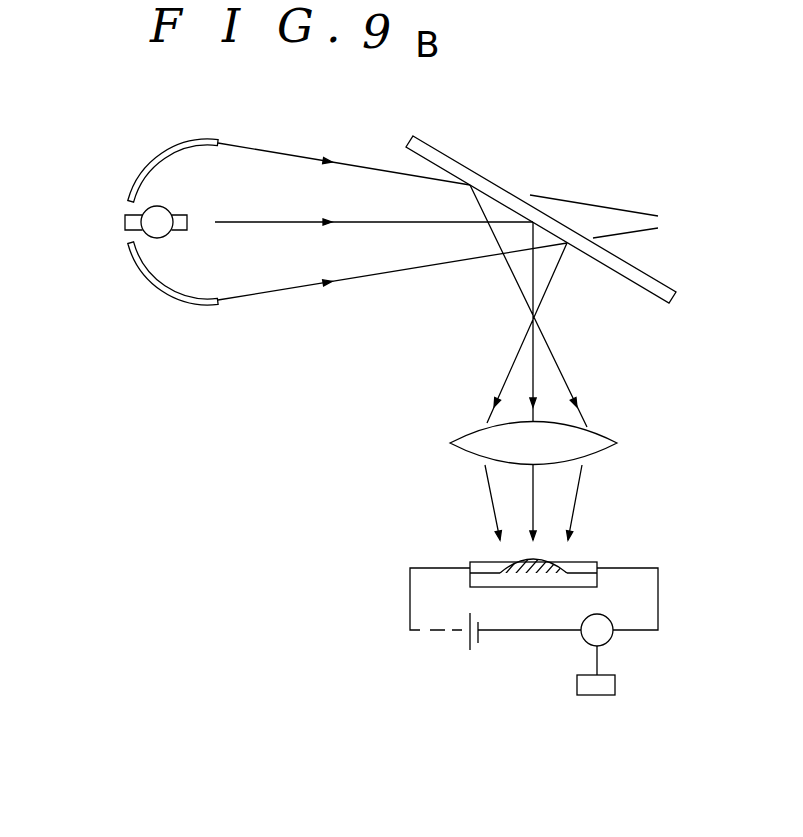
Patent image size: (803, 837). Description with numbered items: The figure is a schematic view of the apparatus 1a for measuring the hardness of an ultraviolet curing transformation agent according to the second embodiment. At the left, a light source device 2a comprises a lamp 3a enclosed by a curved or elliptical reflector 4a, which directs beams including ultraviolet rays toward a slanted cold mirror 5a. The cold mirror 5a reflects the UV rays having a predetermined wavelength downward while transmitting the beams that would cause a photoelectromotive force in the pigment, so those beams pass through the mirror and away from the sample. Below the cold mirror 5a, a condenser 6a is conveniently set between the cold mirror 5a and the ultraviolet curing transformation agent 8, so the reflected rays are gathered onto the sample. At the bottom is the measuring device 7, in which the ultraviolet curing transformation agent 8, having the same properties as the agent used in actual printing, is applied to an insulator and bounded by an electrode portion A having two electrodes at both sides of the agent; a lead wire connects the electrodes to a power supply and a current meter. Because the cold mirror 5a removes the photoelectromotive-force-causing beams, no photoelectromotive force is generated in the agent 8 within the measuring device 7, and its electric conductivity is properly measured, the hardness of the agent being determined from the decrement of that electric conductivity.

The apparatus for measuring the hardness of the UV curing transformation agent 1a is at (240, 362).
The light source device 2a is at (137, 283).
The lamp 3a is at (125, 220).
The curved or elliptical reflector 4a is at (163, 157).
The cold mirror 5a is at (668, 283).
The condenser 6a is at (592, 428).
The measuring device 7 is at (622, 537).
The ultraviolet curing transformation agent 8 is at (500, 557).
The electrode portion A is at (580, 547).